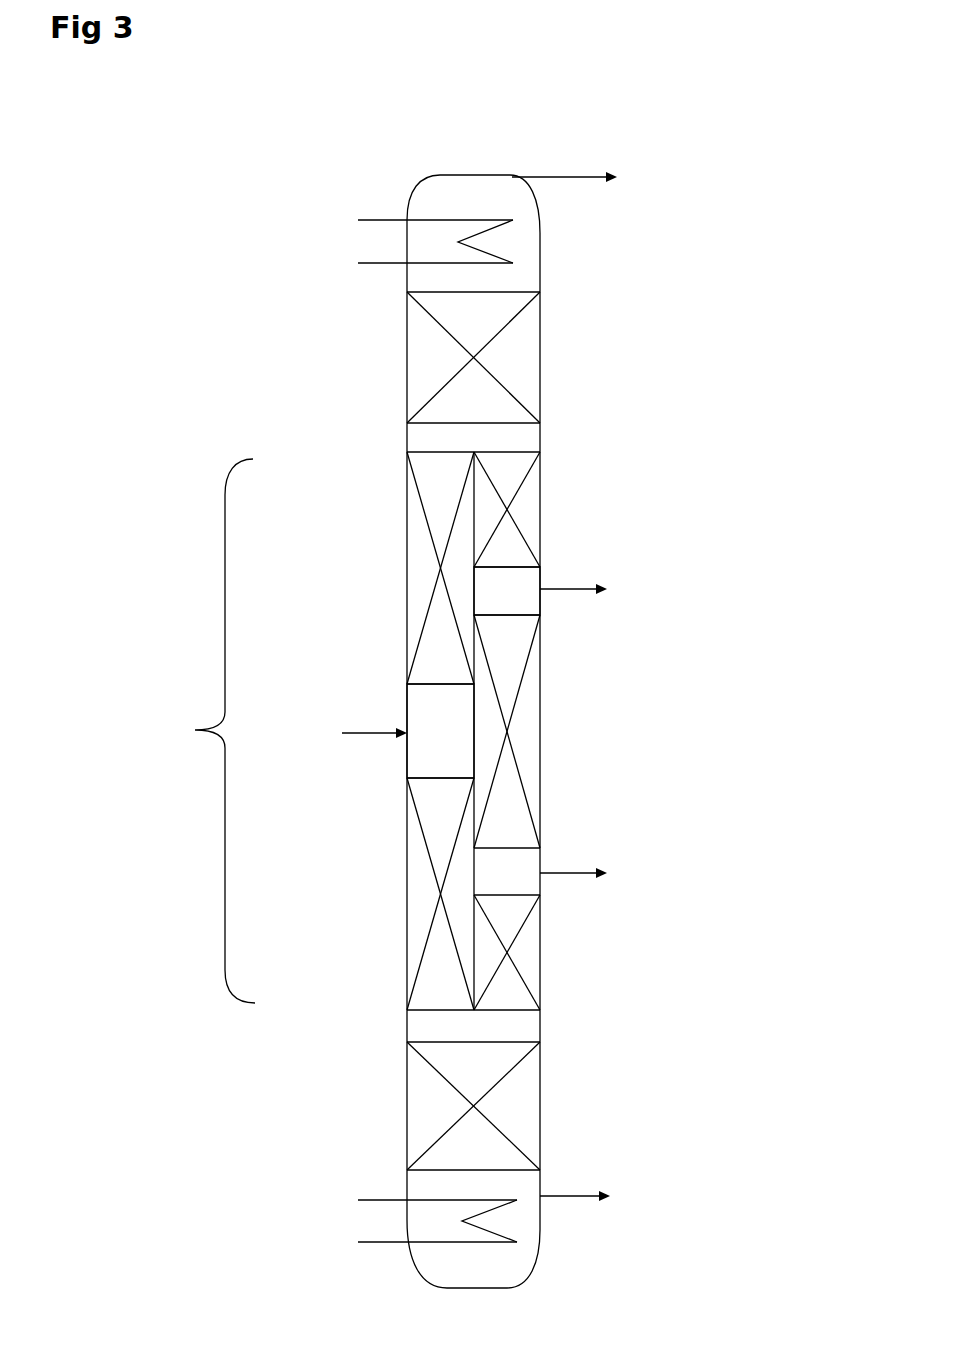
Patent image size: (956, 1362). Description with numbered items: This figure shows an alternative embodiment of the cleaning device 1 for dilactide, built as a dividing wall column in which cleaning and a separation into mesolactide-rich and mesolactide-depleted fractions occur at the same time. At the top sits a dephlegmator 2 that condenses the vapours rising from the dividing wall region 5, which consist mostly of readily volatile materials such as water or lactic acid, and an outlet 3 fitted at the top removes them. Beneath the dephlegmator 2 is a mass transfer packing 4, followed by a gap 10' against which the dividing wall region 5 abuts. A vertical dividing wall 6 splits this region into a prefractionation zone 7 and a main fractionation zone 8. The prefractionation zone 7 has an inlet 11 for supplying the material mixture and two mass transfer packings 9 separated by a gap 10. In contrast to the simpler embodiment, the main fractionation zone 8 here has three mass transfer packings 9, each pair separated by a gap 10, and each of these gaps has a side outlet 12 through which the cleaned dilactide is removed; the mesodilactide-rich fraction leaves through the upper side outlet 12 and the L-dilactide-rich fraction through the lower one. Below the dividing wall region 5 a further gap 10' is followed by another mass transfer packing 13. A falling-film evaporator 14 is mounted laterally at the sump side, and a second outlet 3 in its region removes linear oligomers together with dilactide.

The cleaning device 1 is at (236, 231).
The dephlegmator 2 is at (425, 242).
The outlet 3 is at (553, 172).
The mass transfer packing 4 is at (455, 360).
The dividing wall region 5 is at (194, 731).
The dividing wall 6 is at (467, 606).
The prefractionation zone 7 is at (426, 796).
The main fractionation zone 8 is at (530, 734).
The mass transfer packing 9 is at (425, 538).
The gap 10 is at (464, 672).
The gap 10' is at (400, 721).
The inlet 11 is at (365, 725).
The side outlet 12 is at (575, 586).
The mass transfer packing 13 is at (437, 1109).
The falling-film evaporator 14 is at (437, 1217).